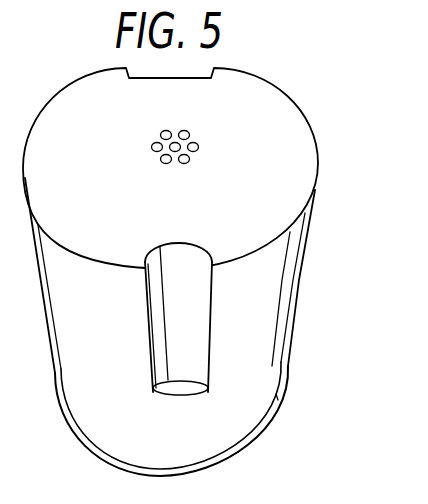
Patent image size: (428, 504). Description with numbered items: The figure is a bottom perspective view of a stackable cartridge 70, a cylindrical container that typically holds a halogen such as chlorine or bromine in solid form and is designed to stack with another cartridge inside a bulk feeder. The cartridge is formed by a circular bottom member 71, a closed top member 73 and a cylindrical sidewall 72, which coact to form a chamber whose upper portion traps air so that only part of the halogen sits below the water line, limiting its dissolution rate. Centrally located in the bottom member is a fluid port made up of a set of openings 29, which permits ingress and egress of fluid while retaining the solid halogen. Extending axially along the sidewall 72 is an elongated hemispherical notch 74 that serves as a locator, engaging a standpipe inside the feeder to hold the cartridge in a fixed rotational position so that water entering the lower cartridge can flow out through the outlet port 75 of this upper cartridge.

The set of openings 29 is at (197, 145).
The stackable cartridge 70 is at (344, 166).
The circular bottom member 71 is at (287, 143).
The cylindrical sidewall 72 is at (288, 310).
The closed top member 73 is at (247, 452).
The elongated hemispherical notch 74 is at (175, 369).
The outlet port 75 is at (186, 383).